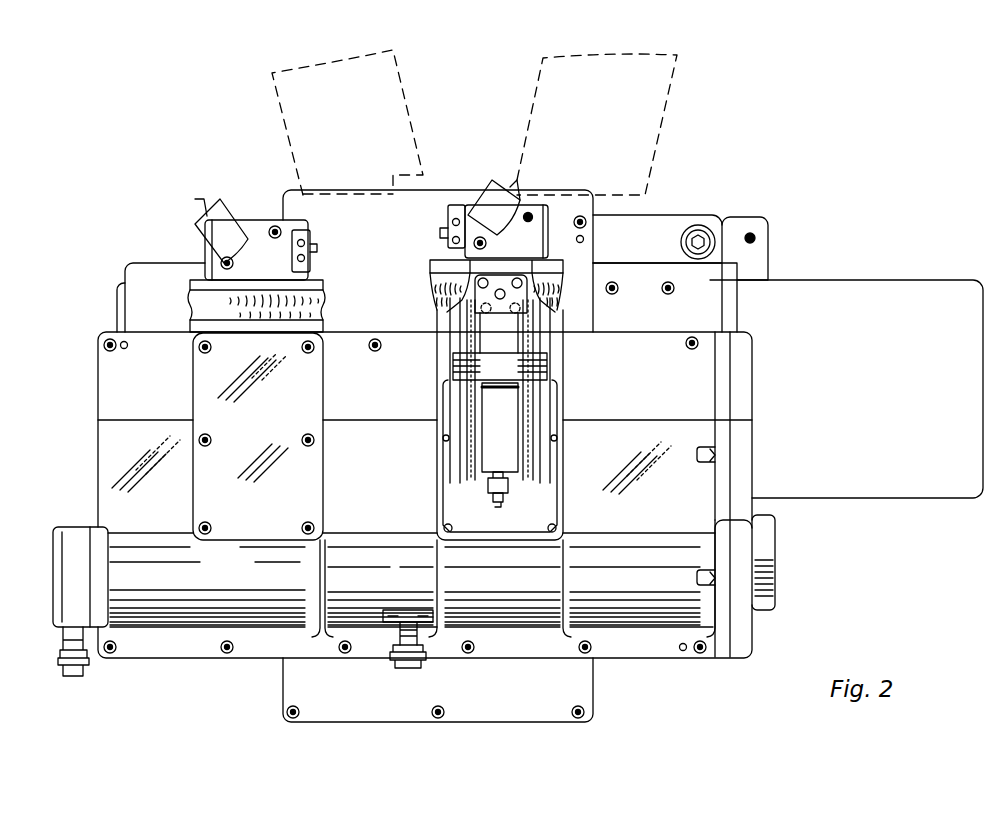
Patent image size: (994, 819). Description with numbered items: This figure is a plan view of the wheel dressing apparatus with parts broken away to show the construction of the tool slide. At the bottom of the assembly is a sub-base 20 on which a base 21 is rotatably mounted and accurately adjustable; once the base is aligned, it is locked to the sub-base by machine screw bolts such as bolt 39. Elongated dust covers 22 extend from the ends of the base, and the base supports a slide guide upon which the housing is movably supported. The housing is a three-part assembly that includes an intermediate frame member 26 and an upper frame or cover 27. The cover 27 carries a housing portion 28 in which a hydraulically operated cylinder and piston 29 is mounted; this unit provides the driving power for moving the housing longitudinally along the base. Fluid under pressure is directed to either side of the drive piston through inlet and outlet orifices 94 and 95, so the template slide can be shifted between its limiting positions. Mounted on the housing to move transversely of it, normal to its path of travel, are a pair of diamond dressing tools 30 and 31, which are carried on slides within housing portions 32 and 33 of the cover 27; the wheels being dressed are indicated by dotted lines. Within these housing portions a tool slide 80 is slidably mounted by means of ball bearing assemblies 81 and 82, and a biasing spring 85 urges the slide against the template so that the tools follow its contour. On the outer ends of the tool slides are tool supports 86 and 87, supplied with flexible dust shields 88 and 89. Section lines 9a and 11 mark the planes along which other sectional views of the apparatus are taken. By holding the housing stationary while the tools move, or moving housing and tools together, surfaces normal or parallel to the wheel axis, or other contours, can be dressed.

The sub-base 20 is at (760, 257).
The base 21 is at (665, 230).
The dust covers 22 is at (895, 297).
The intermediate frame member 26 is at (405, 230).
The upper frame or cover 27 is at (665, 520).
The housing portion 28 is at (203, 610).
The hydraulically operated cylinder and piston 29 is at (72, 530).
The diamond dressing tool 30 is at (492, 185).
The diamond dressing tool 31 is at (225, 212).
The housing portion 32 is at (563, 472).
The housing portion 33 is at (323, 492).
The machine screw bolt 39 is at (703, 238).
The tool slide 80 is at (497, 410).
The ball bearing assembly 81 is at (470, 488).
The ball bearing assembly 82 is at (532, 488).
The biasing spring 85 is at (497, 323).
The tool support 86 is at (568, 265).
The tool support 87 is at (312, 272).
The flexible dust shield 88 is at (572, 288).
The flexible dust shield 89 is at (322, 300).
The inlet and outlet orifice 94 is at (78, 676).
The inlet and outlet orifice 95 is at (408, 668).
The section line 9a— 9a is at (497, 95).
The section line 11— 11 is at (52, 573).